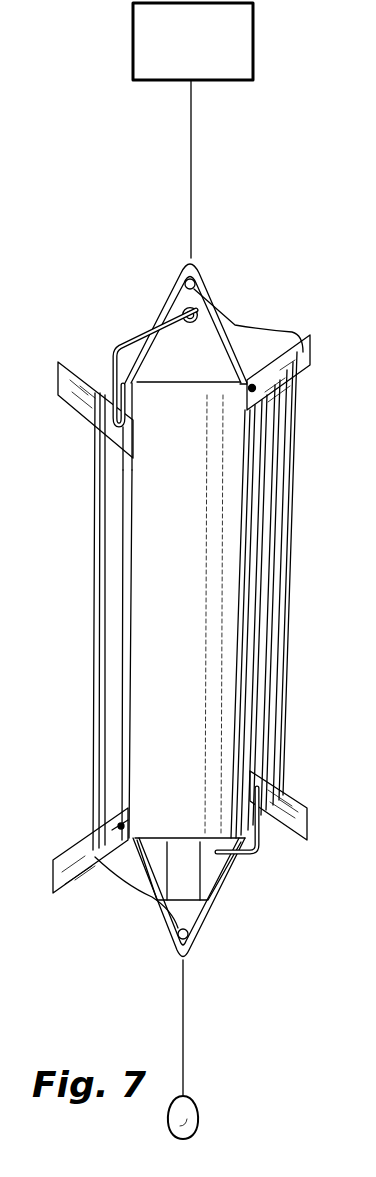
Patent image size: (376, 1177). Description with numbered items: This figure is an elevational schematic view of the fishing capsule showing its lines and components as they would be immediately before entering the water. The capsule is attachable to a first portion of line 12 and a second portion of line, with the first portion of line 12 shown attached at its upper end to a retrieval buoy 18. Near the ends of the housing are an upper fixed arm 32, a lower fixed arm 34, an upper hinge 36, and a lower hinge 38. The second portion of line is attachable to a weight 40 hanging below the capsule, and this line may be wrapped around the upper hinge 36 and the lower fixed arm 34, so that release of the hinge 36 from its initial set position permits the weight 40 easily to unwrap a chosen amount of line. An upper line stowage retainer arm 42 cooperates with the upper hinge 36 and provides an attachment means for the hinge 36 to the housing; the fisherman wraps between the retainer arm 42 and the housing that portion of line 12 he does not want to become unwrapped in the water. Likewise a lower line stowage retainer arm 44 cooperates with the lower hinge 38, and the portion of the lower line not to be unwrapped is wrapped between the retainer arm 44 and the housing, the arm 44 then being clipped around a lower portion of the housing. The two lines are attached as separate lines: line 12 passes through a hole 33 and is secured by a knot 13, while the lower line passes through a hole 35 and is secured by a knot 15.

The first portion of line 12 is at (238, 380).
The knot 13 is at (240, 388).
The knot 15 is at (126, 822).
The retrieval buoy 18 is at (253, 45).
The upper fixed arm 32 is at (311, 340).
The hole 33 is at (253, 383).
The lower fixed arm 34 is at (73, 886).
The hole 35 is at (118, 827).
The upper hinge 36 is at (74, 384).
The lower hinge 38 is at (311, 828).
The weight 40 is at (200, 1117).
The upper line stowage retainer arm 42 is at (130, 334).
The lower line stowage retainer arm 44 is at (259, 853).